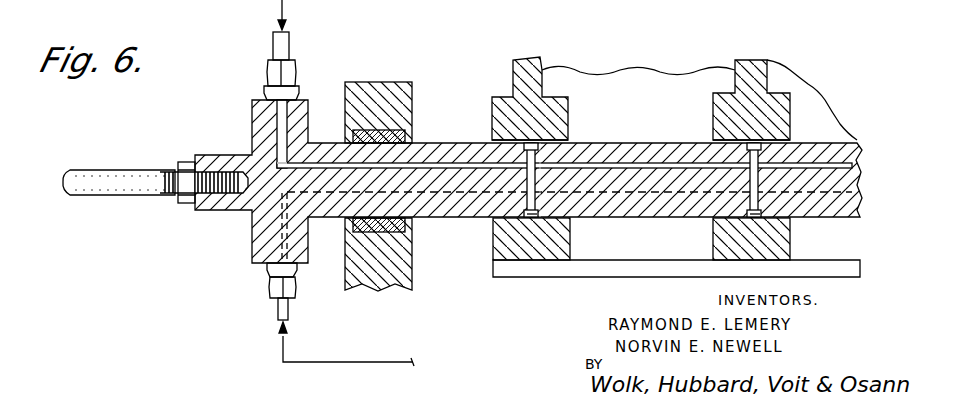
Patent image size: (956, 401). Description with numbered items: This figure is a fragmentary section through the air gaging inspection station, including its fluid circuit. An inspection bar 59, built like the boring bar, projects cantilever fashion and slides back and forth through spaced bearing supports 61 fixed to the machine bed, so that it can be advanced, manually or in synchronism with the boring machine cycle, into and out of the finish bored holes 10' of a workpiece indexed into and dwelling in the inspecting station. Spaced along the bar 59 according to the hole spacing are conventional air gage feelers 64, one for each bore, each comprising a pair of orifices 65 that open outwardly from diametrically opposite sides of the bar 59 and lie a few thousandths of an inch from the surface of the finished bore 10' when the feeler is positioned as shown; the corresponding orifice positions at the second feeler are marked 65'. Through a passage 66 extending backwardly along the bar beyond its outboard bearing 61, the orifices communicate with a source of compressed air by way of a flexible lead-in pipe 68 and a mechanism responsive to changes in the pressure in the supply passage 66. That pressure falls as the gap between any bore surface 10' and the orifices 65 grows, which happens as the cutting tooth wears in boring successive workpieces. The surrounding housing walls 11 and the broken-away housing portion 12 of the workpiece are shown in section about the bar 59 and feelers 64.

The flexible lead-in pipe 68 is at (285, 50).
The bearing supports 61 is at (372, 83).
The housing wall 11 is at (517, 80).
The housing 12 is at (649, 70).
The inspection bar 59 is at (673, 142).
The seal ring 65' is at (525, 178).
The orifices 65 is at (786, 162).
The finish bored holes 10' is at (689, 180).
The air gage feelers 64 is at (532, 222).
The air supply passage 66 is at (443, 163).